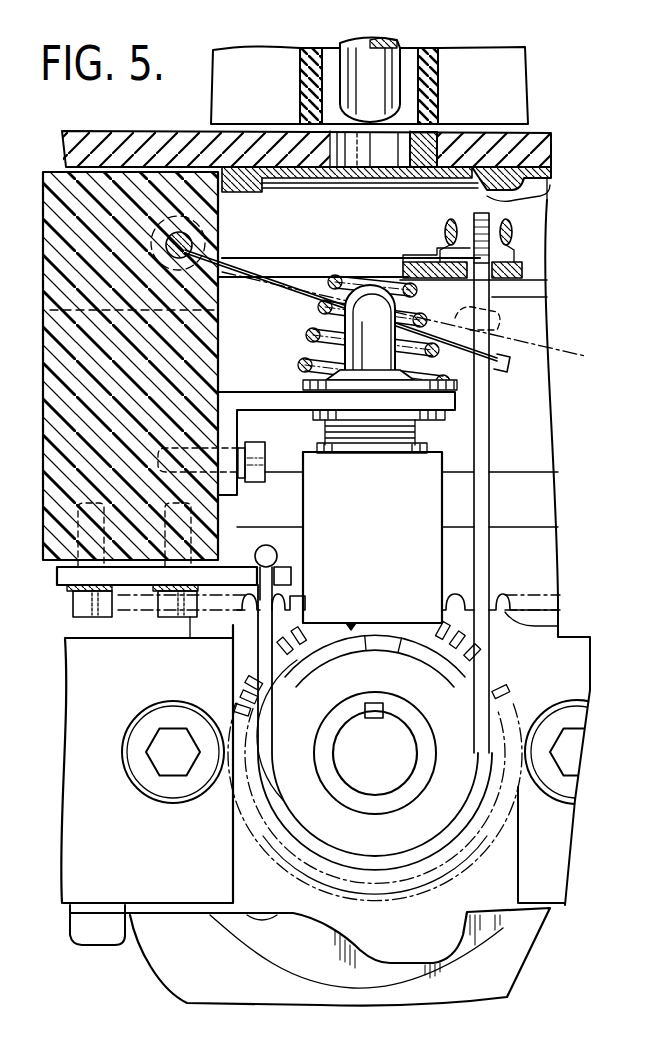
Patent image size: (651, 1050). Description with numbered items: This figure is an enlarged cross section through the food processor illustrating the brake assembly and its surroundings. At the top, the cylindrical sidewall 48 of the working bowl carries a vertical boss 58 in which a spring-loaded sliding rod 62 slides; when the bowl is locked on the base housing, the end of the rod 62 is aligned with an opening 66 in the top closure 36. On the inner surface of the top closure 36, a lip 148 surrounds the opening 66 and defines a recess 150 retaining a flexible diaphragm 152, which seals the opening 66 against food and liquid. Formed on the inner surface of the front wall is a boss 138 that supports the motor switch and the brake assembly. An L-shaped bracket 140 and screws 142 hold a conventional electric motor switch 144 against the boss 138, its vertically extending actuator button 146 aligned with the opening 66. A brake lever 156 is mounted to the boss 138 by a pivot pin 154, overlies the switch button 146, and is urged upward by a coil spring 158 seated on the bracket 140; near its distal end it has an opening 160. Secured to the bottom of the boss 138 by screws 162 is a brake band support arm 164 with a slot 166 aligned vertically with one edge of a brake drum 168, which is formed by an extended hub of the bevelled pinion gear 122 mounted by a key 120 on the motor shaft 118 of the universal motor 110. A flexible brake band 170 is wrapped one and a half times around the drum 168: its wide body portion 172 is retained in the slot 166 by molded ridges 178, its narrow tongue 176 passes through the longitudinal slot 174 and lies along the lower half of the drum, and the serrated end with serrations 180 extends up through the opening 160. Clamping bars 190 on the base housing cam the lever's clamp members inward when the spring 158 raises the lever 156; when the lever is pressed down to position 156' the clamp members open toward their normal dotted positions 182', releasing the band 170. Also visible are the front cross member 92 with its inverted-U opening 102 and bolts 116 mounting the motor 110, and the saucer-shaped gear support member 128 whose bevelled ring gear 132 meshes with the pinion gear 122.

The top closure 36 is at (546, 132).
The cylindrical sidewall 48 is at (525, 62).
The vertical boss 58 is at (305, 75).
The sliding rod 62 is at (392, 68).
The opening 66 is at (408, 158).
The front cross member 92 is at (566, 892).
The opening 102 is at (520, 850).
The universal motor 110 is at (443, 1008).
The bolts 116 is at (168, 797).
The motor shaft 118 is at (375, 753).
The key 120 is at (382, 704).
The bevelled pinion gear 122 is at (243, 697).
The gear support member 128 is at (552, 408).
The bevelled ring gear 132 is at (560, 612).
The boss 138 is at (55, 178).
The L-shaped bracket 140 is at (252, 394).
The screws 142 is at (264, 448).
The electric motor switch 144 is at (355, 537).
The actuator button 146 is at (368, 286).
The lip 148 is at (525, 192).
The recess 150 is at (500, 168).
The flexible diaphragm 152 is at (368, 176).
The pivot pin 154 is at (192, 243).
The brake lever 156 is at (347, 300).
The brake lever (pivoted-down position) 156' is at (421, 318).
The coil spring 158 is at (316, 337).
The opening 160 is at (520, 284).
The screws 162 is at (168, 617).
The brake band support arm 164 is at (238, 590).
The slot 166 is at (257, 562).
The brake drum 168 is at (297, 818).
The flexible brake band 170 is at (351, 623).
The body portion 172 is at (316, 850).
The longitudinal slot 174 is at (283, 664).
The tongue 176 is at (490, 450).
The ridges 178 is at (292, 578).
The serrations 180 is at (492, 215).
The clamp members (normal dotted-line position) 182' is at (532, 317).
The clamping bars 190 is at (446, 225).